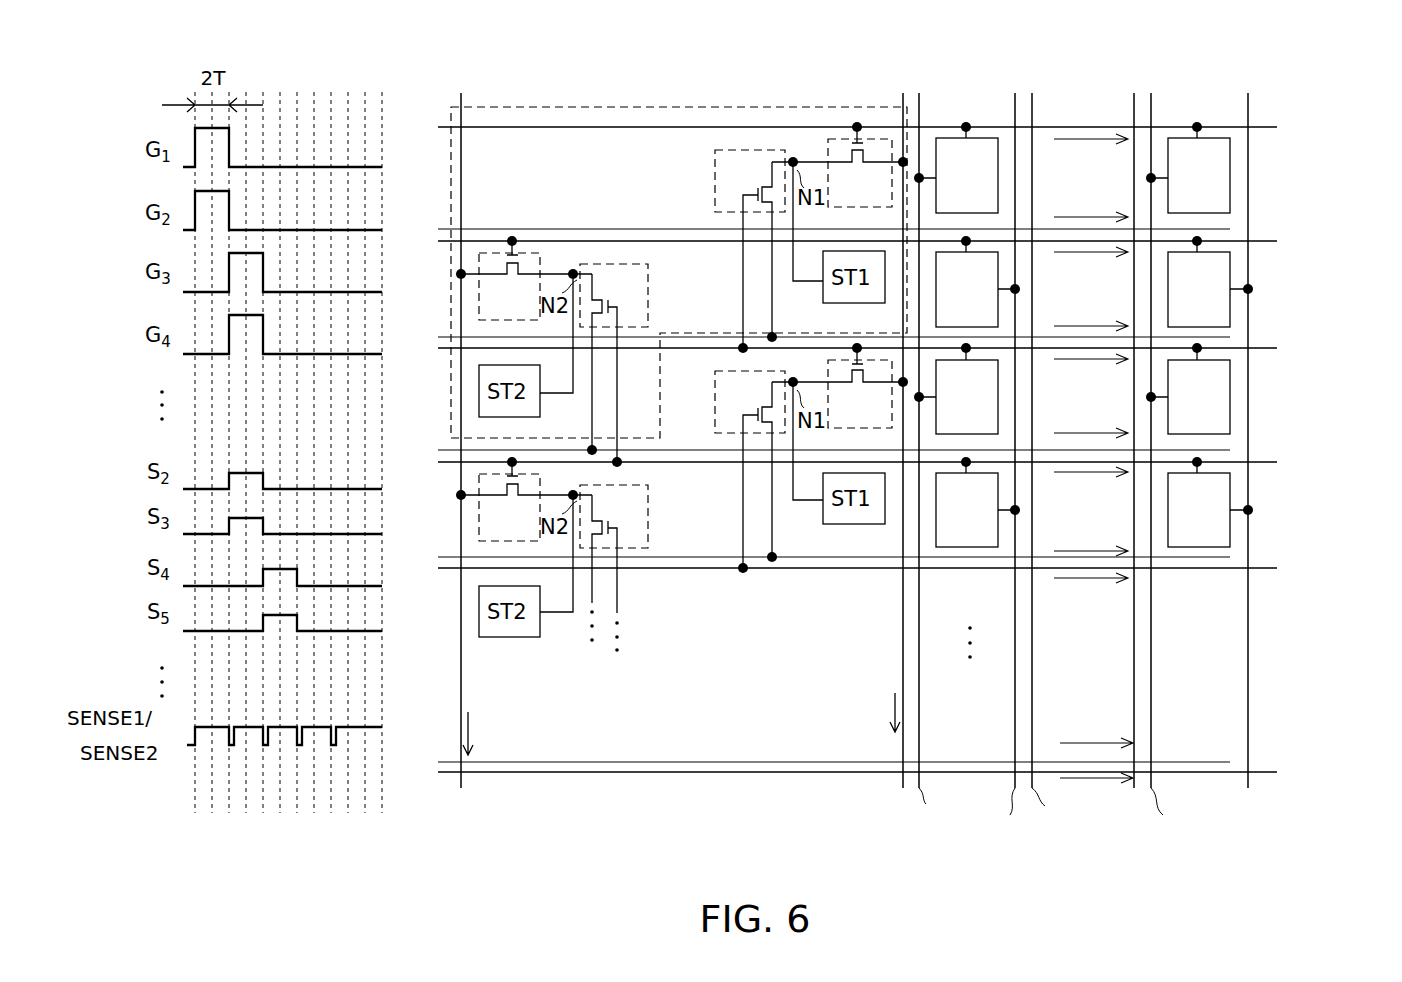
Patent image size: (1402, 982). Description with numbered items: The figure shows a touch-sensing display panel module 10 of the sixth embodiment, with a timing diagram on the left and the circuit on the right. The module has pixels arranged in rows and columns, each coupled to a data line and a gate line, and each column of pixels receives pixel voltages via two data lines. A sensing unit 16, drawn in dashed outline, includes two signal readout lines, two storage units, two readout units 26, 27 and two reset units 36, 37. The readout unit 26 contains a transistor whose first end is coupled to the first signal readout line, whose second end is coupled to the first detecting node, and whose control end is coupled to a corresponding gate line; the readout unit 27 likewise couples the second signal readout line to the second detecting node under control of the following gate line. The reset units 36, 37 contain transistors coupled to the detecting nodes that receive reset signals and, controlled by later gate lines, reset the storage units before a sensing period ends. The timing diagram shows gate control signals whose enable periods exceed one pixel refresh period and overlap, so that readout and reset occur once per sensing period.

The display device 10 is at (1340, 94).
The sensing unit 16 is at (702, 106).
The readout unit 26 is at (830, 139).
The readout unit 27 is at (540, 252).
The reset unit 36 is at (715, 210).
The reset unit 37 is at (650, 325).